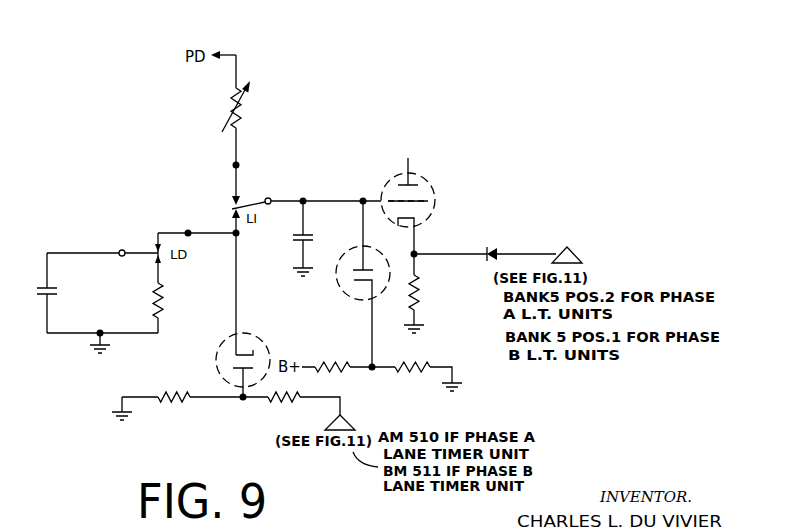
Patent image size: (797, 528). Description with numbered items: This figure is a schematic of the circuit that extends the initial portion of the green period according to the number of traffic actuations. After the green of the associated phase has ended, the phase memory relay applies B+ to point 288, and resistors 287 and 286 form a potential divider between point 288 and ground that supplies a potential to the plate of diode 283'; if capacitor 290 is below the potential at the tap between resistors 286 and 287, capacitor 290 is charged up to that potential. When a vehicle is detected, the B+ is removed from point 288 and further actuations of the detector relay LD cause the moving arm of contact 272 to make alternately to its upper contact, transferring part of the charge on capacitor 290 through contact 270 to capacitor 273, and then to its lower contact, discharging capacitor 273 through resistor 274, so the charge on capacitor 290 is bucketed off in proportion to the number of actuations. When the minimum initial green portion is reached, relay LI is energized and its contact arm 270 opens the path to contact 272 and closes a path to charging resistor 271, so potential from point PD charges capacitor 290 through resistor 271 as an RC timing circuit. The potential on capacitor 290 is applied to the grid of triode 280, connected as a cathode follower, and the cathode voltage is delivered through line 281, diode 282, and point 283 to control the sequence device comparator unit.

The relay LI contact arm 270 is at (242, 200).
The charging resistor 271 is at (241, 144).
The LD relay contact 272 is at (124, 250).
The capacitor 273 is at (60, 292).
The resistor 274 is at (164, 292).
The triode 280 is at (410, 172).
The line 281 is at (432, 254).
The diode 282 is at (491, 250).
The point 283 is at (586, 251).
The diode 283' is at (226, 358).
The resistor 286 is at (172, 393).
The resistor 287 is at (284, 403).
The point 288 is at (346, 424).
The capacitor 290 is at (314, 237).